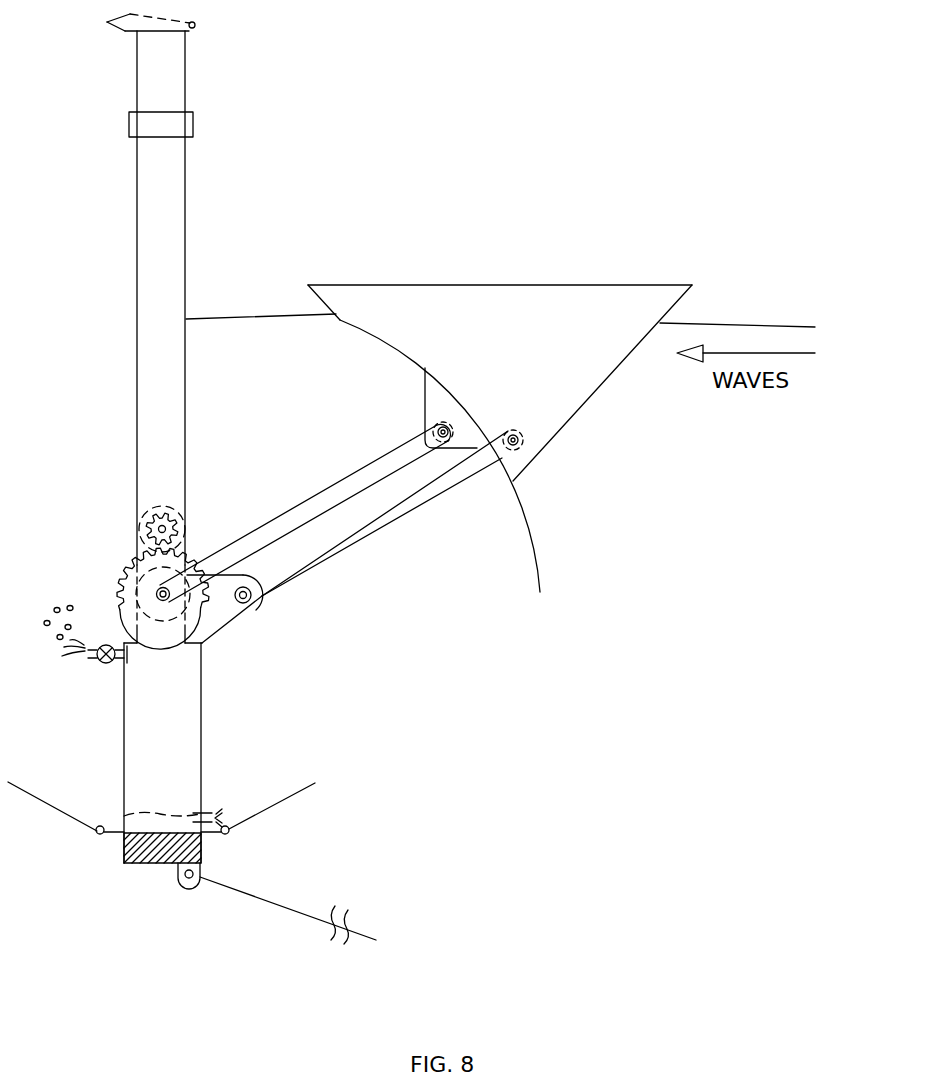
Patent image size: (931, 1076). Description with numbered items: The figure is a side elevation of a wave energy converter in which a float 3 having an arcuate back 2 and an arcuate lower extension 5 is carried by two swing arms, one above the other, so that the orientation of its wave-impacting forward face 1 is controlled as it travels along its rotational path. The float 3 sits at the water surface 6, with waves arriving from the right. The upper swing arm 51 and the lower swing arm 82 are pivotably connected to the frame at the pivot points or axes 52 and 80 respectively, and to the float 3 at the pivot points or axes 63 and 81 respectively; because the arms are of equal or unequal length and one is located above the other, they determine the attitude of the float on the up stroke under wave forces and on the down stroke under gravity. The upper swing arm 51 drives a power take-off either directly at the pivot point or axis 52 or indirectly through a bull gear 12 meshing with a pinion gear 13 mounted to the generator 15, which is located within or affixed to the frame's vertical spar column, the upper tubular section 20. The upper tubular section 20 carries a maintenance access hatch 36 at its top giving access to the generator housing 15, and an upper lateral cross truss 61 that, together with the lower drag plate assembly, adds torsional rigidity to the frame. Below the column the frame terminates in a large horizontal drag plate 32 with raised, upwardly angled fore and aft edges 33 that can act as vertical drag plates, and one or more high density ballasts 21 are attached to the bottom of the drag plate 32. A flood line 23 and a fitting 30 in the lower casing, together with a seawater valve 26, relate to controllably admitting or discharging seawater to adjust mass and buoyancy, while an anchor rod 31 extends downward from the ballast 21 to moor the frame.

The float body 1 is at (598, 388).
The arcuate back 2 is at (392, 348).
The float 3 is at (437, 336).
The arcuate lower extension 5 is at (530, 530).
The water surface 6 is at (245, 316).
The bull gear 12 is at (122, 568).
The pinion gear 13 is at (175, 527).
The PTO-generator housing 15 is at (158, 508).
The upper tubular section 20 is at (187, 253).
The ballast 21 is at (163, 864).
The ballast line 23 is at (171, 812).
The valve 26 is at (103, 665).
The fitting 30 is at (208, 812).
The anchor rod 31 is at (300, 912).
The horizontal drag plate 32 is at (112, 828).
The raised fore and aft edges 33 is at (272, 810).
The maintenance access hatch 36 is at (107, 22).
The swing arm 51 is at (345, 477).
The pivot point or axis 52 is at (157, 597).
The upper lateral cross truss 61 is at (194, 125).
The pivot point or axis 63 is at (437, 428).
The pivot point or axis 80 is at (244, 604).
The pivot point or axis 81 is at (520, 433).
The swing arm 82 is at (338, 529).